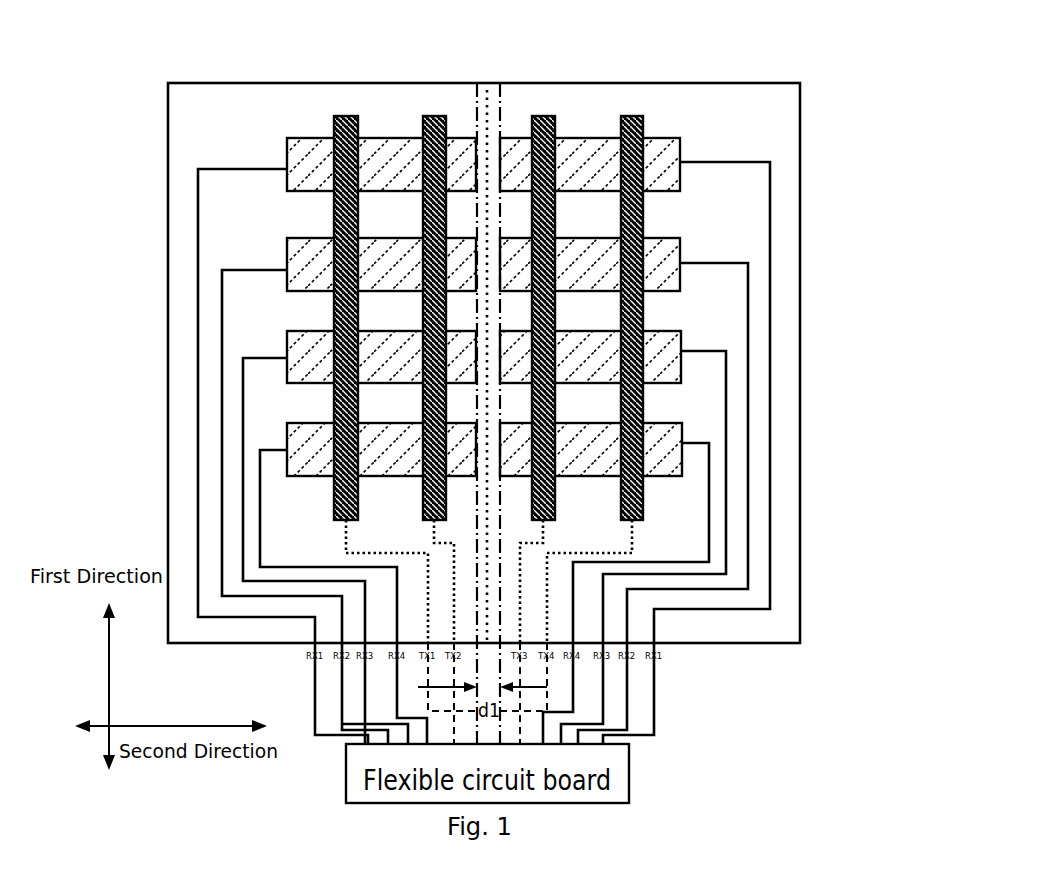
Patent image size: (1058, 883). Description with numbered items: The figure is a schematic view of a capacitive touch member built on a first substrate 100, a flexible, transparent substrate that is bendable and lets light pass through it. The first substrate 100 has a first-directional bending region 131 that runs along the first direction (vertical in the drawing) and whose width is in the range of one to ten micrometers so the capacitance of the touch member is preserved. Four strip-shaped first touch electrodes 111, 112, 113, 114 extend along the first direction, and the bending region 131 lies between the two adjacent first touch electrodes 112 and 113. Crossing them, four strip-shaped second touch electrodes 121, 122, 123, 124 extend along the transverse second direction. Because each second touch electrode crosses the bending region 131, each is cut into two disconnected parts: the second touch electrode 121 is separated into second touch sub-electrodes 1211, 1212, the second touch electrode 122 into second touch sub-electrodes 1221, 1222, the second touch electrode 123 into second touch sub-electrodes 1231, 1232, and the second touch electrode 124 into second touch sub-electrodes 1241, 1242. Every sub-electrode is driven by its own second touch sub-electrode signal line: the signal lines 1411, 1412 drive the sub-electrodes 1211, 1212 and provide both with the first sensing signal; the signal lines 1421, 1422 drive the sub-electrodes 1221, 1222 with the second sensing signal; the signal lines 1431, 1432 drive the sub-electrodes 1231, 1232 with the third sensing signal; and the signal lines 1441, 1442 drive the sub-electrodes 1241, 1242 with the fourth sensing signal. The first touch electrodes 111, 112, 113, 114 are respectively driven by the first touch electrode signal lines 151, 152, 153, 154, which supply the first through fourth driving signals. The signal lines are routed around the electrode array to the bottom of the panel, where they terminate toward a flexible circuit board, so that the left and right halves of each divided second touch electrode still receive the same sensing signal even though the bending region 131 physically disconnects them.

The first substrate 100 is at (726, 83).
The first touch electrode 111 is at (345, 116).
The first touch electrode 112 is at (434, 116).
The first touch electrode 113 is at (543, 116).
The first touch electrode 114 is at (632, 116).
The second touch electrode 121 is at (404, 184).
The second touch electrode 122 is at (398, 283).
The second touch electrode 123 is at (404, 370).
The second touch electrode 124 is at (404, 465).
The first-directional bending region 131 is at (488, 97).
The second touch sub-electrode 1211 is at (287, 150).
The second touch sub-electrode 1212 is at (680, 148).
The second touch sub-electrode 1221 is at (287, 253).
The second touch sub-electrode 1222 is at (681, 253).
The second touch sub-electrode 1231 is at (287, 342).
The second touch sub-electrode 1232 is at (681, 339).
The second touch sub-electrode 1241 is at (300, 424).
The second touch sub-electrode 1242 is at (672, 424).
The second touch sub-electrode signal line 1411 is at (198, 234).
The second touch sub-electrode signal line 1412 is at (770, 237).
The second touch sub-electrode signal line 1421 is at (222, 293).
The second touch sub-electrode signal line 1422 is at (748, 297).
The second touch sub-electrode signal line 1431 is at (243, 372).
The second touch sub-electrode signal line 1432 is at (726, 376).
The second touch sub-electrode signal line 1441 is at (260, 478).
The second touch sub-electrode signal line 1442 is at (709, 482).
The first touch electrode signal line 151 is at (344, 543).
The first touch electrode signal line 152 is at (433, 538).
The first touch electrode signal line 153 is at (544, 538).
The first touch electrode signal line 154 is at (632, 538).